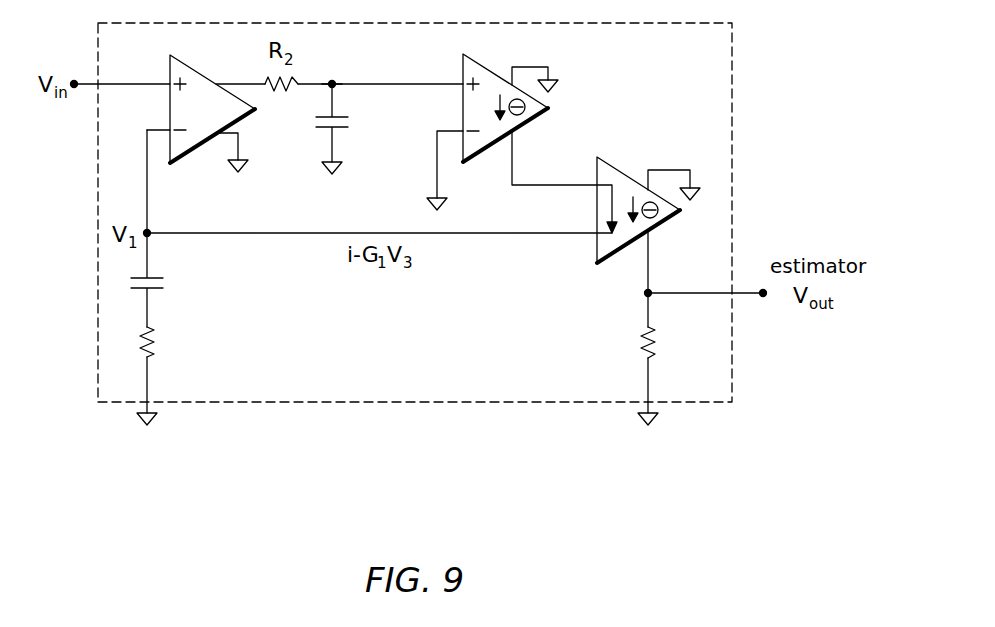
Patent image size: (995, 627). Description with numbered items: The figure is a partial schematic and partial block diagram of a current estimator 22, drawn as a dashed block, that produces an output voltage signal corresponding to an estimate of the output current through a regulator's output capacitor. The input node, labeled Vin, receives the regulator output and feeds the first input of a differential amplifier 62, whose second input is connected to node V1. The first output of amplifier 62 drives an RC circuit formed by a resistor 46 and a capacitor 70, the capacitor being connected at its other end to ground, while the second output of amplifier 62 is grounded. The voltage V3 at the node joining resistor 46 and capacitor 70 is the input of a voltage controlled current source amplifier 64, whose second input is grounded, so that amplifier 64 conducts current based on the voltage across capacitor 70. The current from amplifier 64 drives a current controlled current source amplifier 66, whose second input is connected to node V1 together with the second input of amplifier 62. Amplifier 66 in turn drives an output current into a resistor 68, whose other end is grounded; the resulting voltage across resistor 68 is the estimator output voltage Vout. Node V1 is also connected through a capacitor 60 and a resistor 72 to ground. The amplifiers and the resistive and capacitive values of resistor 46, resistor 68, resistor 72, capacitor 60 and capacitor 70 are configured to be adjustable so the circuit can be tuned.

The current estimator 22 is at (436, 402).
The resistor 46 is at (302, 82).
The capacitor 60 is at (153, 274).
The differential amplifier 62 is at (193, 153).
The voltage controlled current source amplifier 64 is at (491, 71).
The current controlled current source amplifier 66 is at (622, 173).
The resistor 68 is at (656, 343).
The capacitor 70 is at (322, 130).
The resistor 72 is at (156, 358).